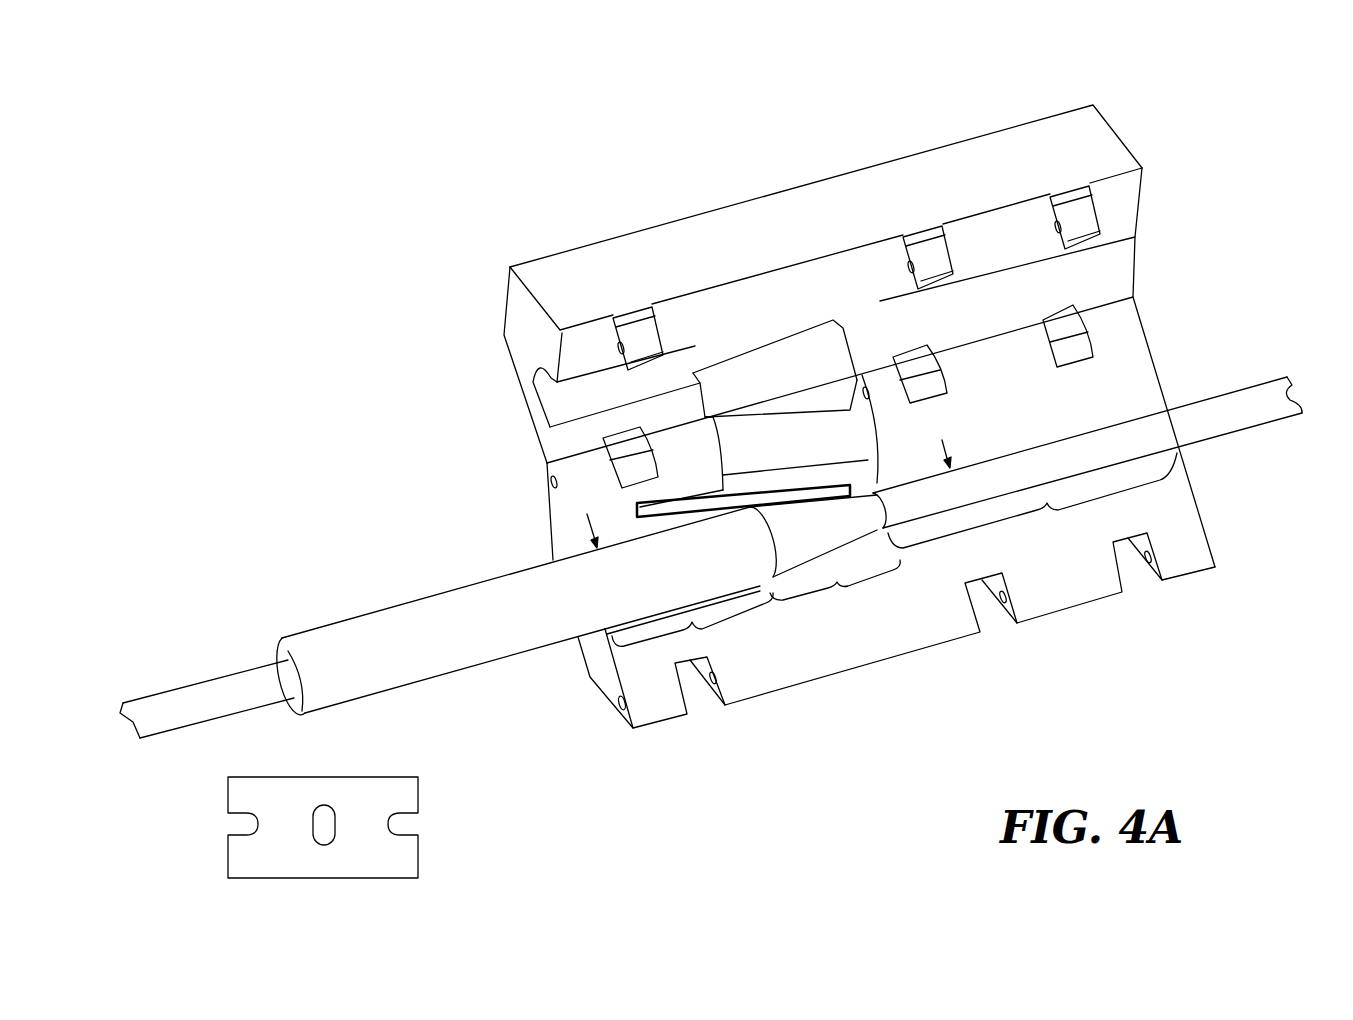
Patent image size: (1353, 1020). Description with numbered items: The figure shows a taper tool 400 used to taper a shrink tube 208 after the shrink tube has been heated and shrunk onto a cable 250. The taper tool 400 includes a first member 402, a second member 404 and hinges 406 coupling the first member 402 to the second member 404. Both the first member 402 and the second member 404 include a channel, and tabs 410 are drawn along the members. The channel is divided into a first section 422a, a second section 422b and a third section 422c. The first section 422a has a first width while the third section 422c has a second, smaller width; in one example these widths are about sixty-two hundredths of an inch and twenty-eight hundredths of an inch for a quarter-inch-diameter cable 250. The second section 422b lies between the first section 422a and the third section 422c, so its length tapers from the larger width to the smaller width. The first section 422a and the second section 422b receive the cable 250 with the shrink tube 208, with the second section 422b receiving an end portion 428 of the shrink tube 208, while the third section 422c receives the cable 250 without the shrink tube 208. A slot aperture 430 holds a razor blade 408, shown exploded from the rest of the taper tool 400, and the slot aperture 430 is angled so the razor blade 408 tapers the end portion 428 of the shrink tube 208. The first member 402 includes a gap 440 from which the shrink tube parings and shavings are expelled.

The taper tool 400 is at (662, 115).
The first member 402 is at (548, 270).
The second member 404 is at (657, 707).
The hinges 406 is at (632, 455).
The razor blade 408 is at (407, 854).
The alignment tabs 410 is at (642, 340).
The shrink tube 208 is at (331, 640).
The cable 250 is at (197, 694).
The first section 422a is at (626, 636).
The second section 422b is at (835, 590).
The third section 422c is at (965, 513).
The end portion 428 is at (830, 539).
The slot aperture 430 is at (781, 497).
The gap 440 is at (797, 399).